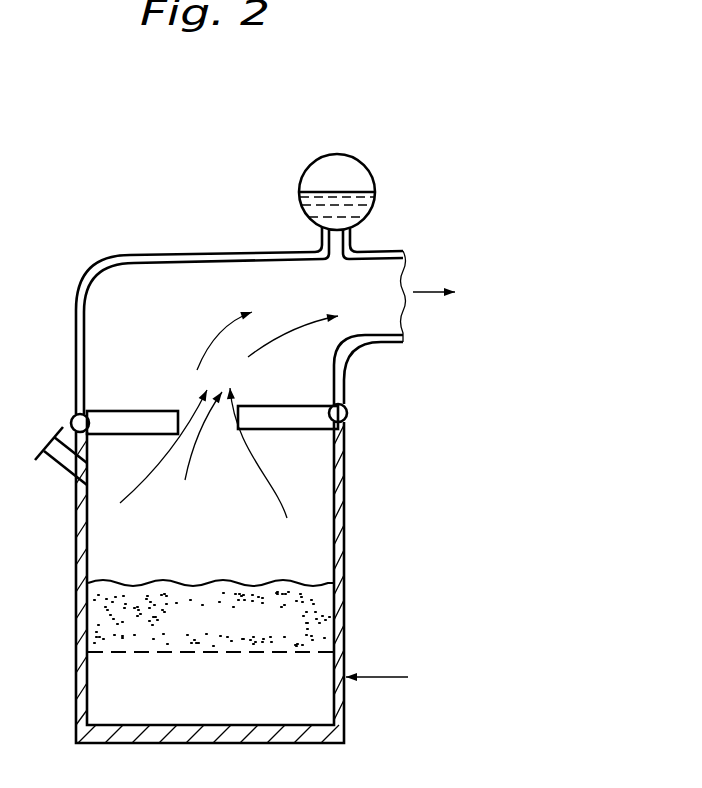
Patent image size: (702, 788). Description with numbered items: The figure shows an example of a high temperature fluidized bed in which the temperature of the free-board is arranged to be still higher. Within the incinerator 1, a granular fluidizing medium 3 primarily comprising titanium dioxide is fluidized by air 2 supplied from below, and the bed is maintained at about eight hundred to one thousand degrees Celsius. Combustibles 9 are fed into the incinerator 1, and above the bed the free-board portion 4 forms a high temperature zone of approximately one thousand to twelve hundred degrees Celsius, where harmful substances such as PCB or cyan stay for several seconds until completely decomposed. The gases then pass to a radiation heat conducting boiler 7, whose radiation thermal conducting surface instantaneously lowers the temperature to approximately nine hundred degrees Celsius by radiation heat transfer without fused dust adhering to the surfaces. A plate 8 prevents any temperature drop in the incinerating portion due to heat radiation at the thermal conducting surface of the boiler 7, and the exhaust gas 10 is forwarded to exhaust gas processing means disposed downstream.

The incinerator 1 is at (345, 530).
The air 2 is at (381, 677).
The fluidizing medium 3 is at (98, 622).
The free-board portion 4 is at (96, 495).
The radiation heat conducting boiler 7 is at (123, 254).
The plate 8 is at (136, 410).
The combustibles 9 is at (40, 436).
The exhaust gas 10 is at (430, 290).